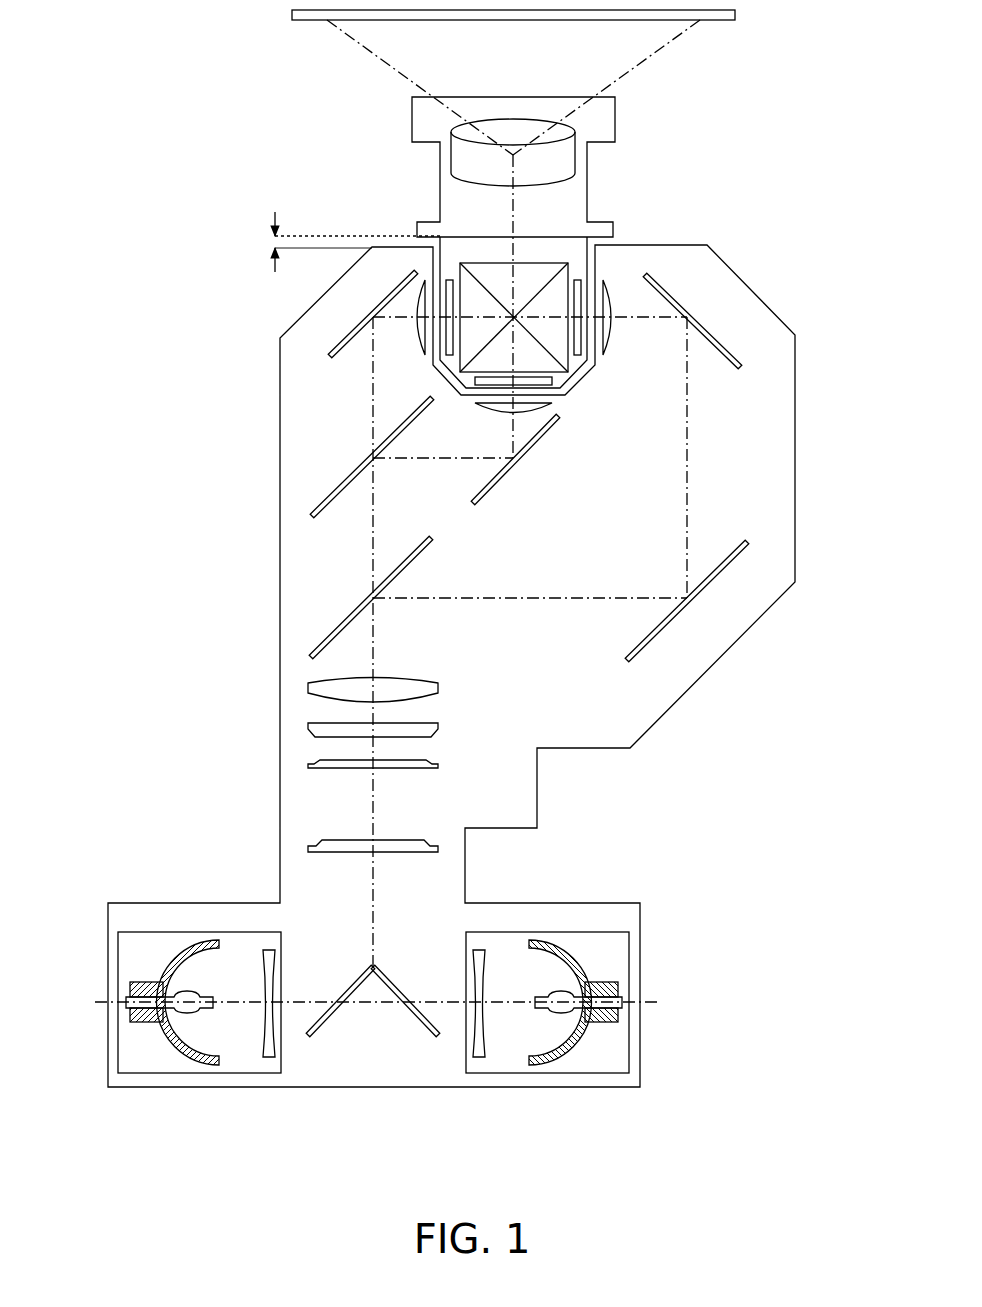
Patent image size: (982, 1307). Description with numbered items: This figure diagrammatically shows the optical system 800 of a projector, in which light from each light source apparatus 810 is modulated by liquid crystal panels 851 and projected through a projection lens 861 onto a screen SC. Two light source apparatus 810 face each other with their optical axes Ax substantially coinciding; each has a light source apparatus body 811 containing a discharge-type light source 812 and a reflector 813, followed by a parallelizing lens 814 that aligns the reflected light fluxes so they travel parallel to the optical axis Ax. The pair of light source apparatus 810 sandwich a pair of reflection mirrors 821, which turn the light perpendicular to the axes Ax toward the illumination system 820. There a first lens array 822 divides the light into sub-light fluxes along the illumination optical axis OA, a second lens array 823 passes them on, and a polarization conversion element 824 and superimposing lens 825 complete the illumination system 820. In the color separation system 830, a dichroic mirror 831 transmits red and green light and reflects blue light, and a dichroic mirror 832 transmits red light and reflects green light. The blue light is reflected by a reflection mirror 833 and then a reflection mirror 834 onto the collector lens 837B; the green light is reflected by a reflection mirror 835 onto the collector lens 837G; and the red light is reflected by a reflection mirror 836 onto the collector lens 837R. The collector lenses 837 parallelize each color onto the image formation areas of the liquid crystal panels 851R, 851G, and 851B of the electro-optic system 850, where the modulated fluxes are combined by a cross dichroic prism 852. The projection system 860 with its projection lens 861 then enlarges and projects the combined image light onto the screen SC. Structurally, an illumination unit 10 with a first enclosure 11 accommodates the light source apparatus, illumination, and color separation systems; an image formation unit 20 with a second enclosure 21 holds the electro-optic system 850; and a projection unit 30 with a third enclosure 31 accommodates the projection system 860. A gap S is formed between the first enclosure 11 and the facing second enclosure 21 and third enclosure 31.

The illumination unit 10 is at (484, 666).
The first enclosure 11 is at (797, 492).
The image formation unit 20 is at (524, 320).
The second enclosure 21 is at (604, 358).
The projection unit 30 is at (509, 167).
The third enclosure 31 is at (590, 158).
The optical system 800 is at (259, 351).
The light source apparatus 810 is at (155, 950).
The light source apparatus body 811 is at (374, 1060).
The light source 812 is at (201, 1013).
The reflector 813 is at (170, 1040).
The parallelizing lens 814 is at (272, 1059).
The illumination system 820 is at (319, 888).
The reflection mirrors 821 is at (352, 984).
The first lens array 822 is at (307, 849).
The second lens array 823 is at (307, 766).
The polarization conversion element 824 is at (307, 729).
The superimposing lens 825 is at (307, 688).
The color separation system 830 is at (321, 416).
The dichroic mirror 831 is at (334, 628).
The dichroic mirror 832 is at (334, 488).
The reflection mirror 833 is at (639, 636).
The reflection mirror 834 is at (727, 369).
The reflection mirror 835 is at (498, 488).
The reflection mirror 836 is at (347, 348).
The collector lenses 837 is at (514, 350).
The collector lens for R light 837R is at (421, 282).
The collector lens for G light 837G is at (545, 414).
The collector lens for B light 837B is at (607, 282).
The electro-optic system 850 is at (513, 312).
The liquid crystal panels 851 is at (513, 307).
The liquid crystal panel for R light 851R is at (447, 284).
The liquid crystal panel for G light 851G is at (554, 384).
The liquid crystal panel for B light 851B is at (580, 282).
The cross dichroic prism 852 is at (451, 372).
The projection system 860 is at (487, 167).
The projection lens 861 is at (451, 160).
The gap S is at (345, 242).
The screen SC is at (712, 21).
The illumination optical axis OA is at (376, 892).
The optical axis Ax is at (243, 999).